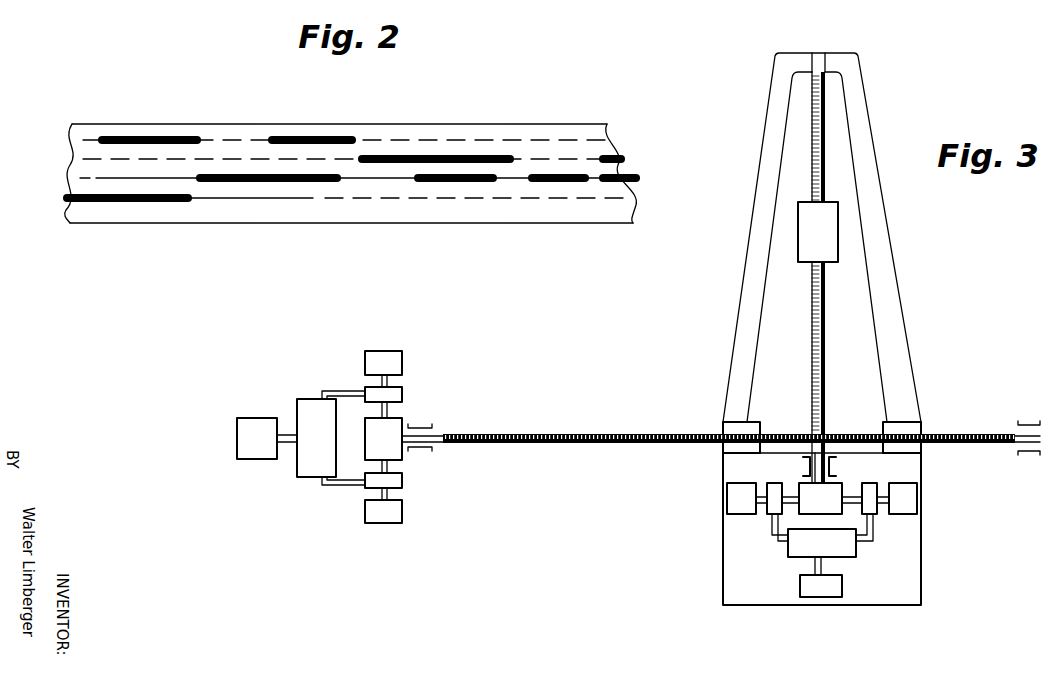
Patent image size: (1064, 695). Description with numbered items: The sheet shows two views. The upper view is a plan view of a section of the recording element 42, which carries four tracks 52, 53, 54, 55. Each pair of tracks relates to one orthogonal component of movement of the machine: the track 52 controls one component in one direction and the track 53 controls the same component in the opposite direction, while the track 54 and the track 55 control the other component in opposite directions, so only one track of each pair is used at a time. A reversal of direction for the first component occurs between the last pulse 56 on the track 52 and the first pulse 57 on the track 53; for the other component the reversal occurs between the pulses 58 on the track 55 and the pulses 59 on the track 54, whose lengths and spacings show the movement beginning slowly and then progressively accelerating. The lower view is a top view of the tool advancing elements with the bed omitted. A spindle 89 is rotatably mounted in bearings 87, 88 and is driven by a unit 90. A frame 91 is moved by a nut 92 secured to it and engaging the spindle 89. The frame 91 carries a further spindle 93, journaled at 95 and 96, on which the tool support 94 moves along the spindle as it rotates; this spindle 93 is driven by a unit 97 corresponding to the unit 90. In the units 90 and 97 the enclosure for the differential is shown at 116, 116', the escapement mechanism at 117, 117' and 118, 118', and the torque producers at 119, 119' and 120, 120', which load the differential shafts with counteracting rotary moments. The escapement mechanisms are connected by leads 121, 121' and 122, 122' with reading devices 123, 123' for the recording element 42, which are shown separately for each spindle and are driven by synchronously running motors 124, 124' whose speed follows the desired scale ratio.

In FIG. 2, the recording element 42 is at (555, 128).
In FIG. 2, the track 52 is at (601, 136).
In FIG. 2, the track 53 is at (621, 161).
In FIG. 2, the track 54 is at (638, 179).
In FIG. 2, the track 55 is at (632, 210).
In FIG. 2, the last pulse 56 is at (338, 136).
In FIG. 2, the first pulse 57 is at (486, 157).
In FIG. 2, the pulses 58 is at (179, 203).
In FIG. 2, the pulses 59 is at (302, 180).
In FIG. 3, the bearing 87 is at (424, 452).
In FIG. 3, the bearing 88 is at (1029, 456).
In FIG. 3, the spindle 89 is at (565, 445).
In FIG. 3, the drive unit 90 is at (328, 497).
In FIG. 3, the frame 91 is at (903, 307).
In FIG. 3, the nut 92 is at (910, 432).
In FIG. 3, the spindle 93 is at (823, 126).
In FIG. 3, the tool support 94 is at (834, 245).
In FIG. 3, the journal 95 is at (828, 63).
In FIG. 3, the journal 96 is at (800, 465).
In FIG. 3, the drive unit 97 is at (787, 567).
In FIG. 3, the differential enclosure 116 is at (751, 531).
In FIG. 3, the escapement mechanism 117 is at (730, 516).
In FIG. 3, the escapement mechanism 118 is at (912, 486).
In FIG. 3, the torque producer 119 is at (708, 501).
In FIG. 3, the torque producer 120 is at (938, 503).
In FIG. 3, the lead 121 is at (727, 563).
In FIG. 3, the lead 122 is at (918, 535).
In FIG. 3, the reading device 123 is at (880, 566).
In FIG. 3, the motor 124 is at (845, 600).
In FIG. 3, the differential enclosure 116' is at (422, 434).
In FIG. 3, the escapement mechanism 117' is at (418, 392).
In FIG. 3, the escapement mechanism 118' is at (420, 503).
In FIG. 3, the torque producer 119' is at (404, 350).
In FIG. 3, the torque producer 120' is at (390, 540).
In FIG. 3, the lead 121' is at (330, 376).
In FIG. 3, the lead 122' is at (339, 516).
In FIG. 3, the reading device 123' is at (281, 450).
In FIG. 3, the motor 124' is at (239, 438).